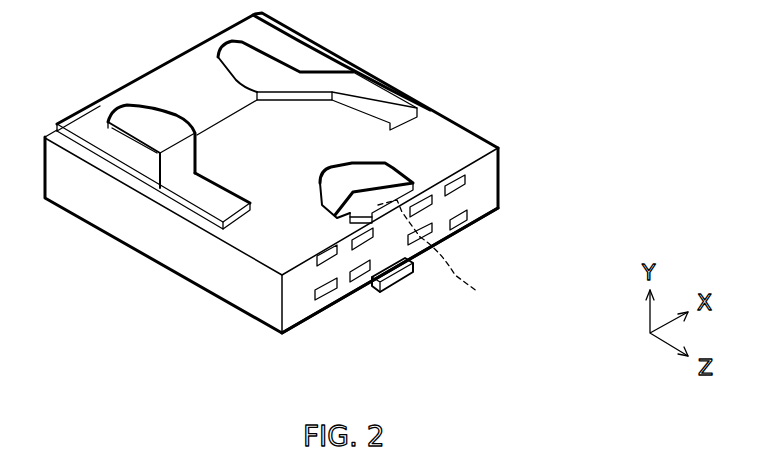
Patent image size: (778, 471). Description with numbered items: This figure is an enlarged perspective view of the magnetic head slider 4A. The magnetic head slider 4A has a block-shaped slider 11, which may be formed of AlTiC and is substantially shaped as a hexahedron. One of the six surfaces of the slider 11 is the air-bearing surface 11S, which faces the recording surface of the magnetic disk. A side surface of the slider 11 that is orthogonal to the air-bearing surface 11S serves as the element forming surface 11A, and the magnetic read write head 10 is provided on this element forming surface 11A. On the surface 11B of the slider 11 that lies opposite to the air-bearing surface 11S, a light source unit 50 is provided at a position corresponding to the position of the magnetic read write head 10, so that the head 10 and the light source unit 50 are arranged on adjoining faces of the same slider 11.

The magnetic head slider 4A is at (509, 95).
The slider 11 is at (490, 178).
The air-bearing surface 11S is at (200, 197).
The element forming surface 11A is at (302, 275).
The surface opposite to the ABS 11B is at (490, 214).
The magnetic read write head 10 is at (447, 254).
The light source unit 50 is at (397, 282).